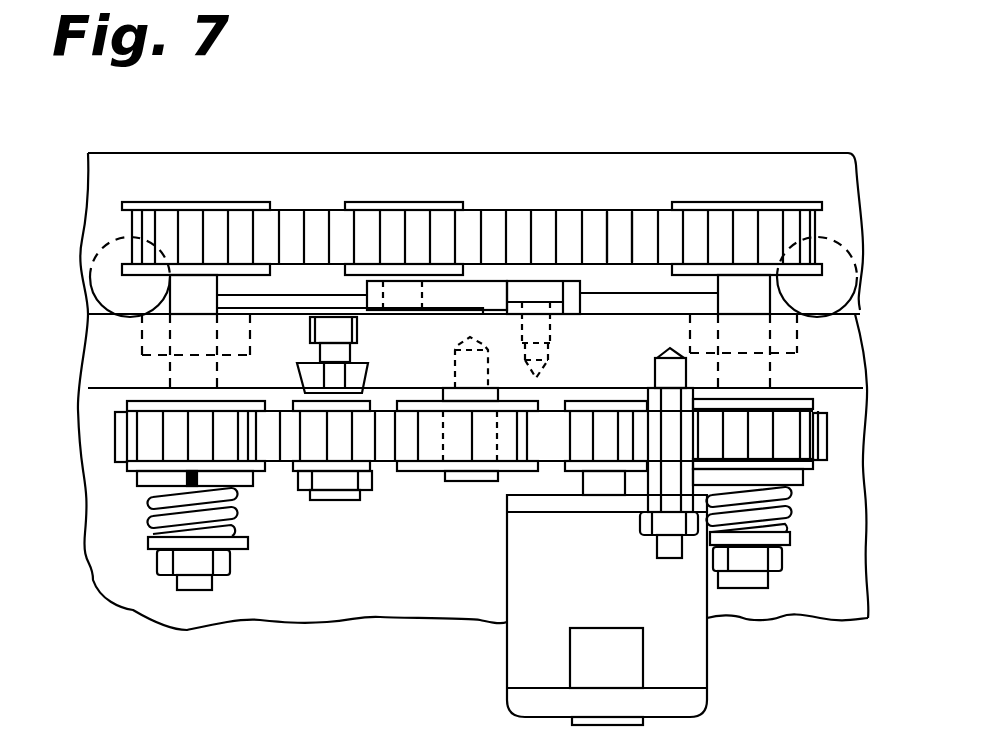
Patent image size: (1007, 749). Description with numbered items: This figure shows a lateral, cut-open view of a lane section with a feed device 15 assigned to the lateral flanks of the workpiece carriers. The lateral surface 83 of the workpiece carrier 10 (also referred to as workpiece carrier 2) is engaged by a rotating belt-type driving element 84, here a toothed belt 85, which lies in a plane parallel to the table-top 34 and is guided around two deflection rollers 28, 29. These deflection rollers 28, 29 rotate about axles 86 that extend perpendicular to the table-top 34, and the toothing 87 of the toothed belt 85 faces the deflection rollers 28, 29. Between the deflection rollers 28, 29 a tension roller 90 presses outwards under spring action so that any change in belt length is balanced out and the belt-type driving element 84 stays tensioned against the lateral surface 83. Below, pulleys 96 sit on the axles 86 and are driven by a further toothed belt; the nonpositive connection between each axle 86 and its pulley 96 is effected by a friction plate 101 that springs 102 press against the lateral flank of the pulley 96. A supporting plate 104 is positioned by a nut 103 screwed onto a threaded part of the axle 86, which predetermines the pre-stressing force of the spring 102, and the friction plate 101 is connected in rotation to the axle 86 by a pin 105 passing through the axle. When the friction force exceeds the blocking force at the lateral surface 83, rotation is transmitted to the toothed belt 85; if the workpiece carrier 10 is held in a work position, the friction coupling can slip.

The workpiece carrier 2 is at (552, 124).
The workpiece carrier 10 is at (128, 175).
The feed device 15 is at (470, 530).
The deflection roller 28 is at (695, 200).
The deflection roller 29 is at (185, 204).
The table-top 34 is at (100, 333).
The lateral surface 83 is at (458, 178).
The belt-type driving element 84 is at (320, 202).
The toothed belt 85 is at (292, 215).
The axle 86 is at (180, 396).
The toothing 87 is at (629, 226).
The tension roller 90 is at (410, 208).
The pulley 96 is at (128, 468).
The friction plate 101 is at (148, 490).
The spring 102 is at (217, 500).
The nut 103 is at (196, 567).
The supporting plate 104 is at (143, 552).
The pin 105 is at (140, 482).